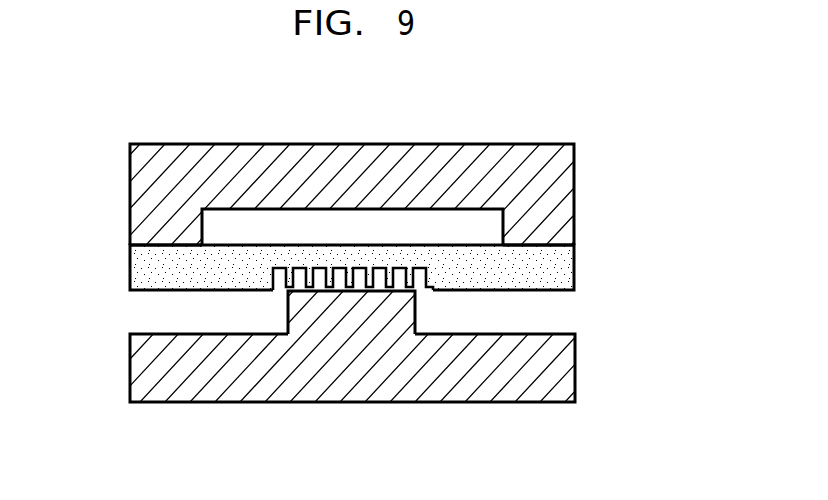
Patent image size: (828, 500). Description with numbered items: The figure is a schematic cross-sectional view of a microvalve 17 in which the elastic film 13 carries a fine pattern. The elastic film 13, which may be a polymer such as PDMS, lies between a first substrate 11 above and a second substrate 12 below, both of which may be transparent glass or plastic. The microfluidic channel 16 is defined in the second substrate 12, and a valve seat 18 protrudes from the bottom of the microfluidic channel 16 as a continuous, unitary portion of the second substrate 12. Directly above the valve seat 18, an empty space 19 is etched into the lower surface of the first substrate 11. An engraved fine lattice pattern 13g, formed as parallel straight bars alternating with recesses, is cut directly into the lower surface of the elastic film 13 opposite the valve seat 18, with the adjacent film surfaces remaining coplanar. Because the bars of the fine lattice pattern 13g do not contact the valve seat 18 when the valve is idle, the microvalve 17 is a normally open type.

The first substrate 11 is at (573, 196).
The second substrate 12 is at (575, 369).
The elastic film 13 is at (573, 269).
The fine lattice pattern 13g is at (418, 293).
The microfluidic channel 16 is at (168, 312).
The microvalve 17 is at (605, 137).
The valve seat 18 is at (290, 311).
The empty space 19 is at (425, 230).